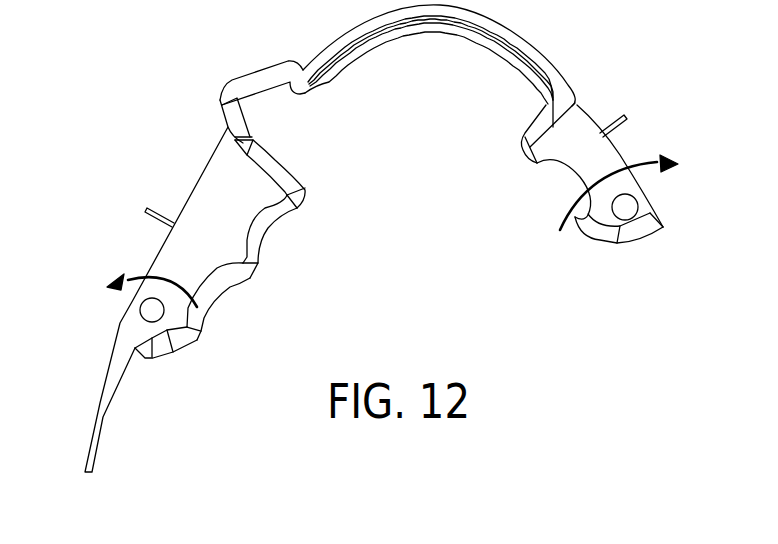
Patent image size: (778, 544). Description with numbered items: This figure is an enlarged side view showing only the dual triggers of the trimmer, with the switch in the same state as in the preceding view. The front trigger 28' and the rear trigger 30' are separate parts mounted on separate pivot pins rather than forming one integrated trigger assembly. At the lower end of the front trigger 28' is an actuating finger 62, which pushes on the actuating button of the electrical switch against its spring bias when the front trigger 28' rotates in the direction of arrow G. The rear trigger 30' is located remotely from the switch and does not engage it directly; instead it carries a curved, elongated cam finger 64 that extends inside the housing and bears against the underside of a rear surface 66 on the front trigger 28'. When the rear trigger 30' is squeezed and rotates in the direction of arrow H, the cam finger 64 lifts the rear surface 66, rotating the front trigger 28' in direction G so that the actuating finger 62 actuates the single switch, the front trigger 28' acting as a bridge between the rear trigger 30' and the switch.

The rear surface 66 is at (259, 86).
The cam finger 64 is at (327, 77).
The front trigger 28' is at (215, 299).
The rear trigger 30' is at (581, 171).
The actuating finger 62 is at (90, 453).
The direction of rotation of front trigger G is at (162, 275).
The direction of rotation of rear trigger H is at (642, 157).